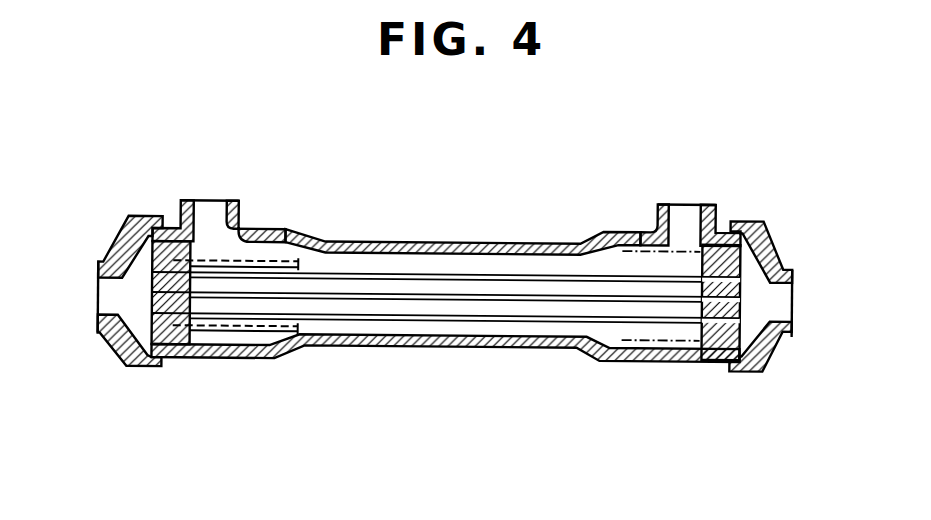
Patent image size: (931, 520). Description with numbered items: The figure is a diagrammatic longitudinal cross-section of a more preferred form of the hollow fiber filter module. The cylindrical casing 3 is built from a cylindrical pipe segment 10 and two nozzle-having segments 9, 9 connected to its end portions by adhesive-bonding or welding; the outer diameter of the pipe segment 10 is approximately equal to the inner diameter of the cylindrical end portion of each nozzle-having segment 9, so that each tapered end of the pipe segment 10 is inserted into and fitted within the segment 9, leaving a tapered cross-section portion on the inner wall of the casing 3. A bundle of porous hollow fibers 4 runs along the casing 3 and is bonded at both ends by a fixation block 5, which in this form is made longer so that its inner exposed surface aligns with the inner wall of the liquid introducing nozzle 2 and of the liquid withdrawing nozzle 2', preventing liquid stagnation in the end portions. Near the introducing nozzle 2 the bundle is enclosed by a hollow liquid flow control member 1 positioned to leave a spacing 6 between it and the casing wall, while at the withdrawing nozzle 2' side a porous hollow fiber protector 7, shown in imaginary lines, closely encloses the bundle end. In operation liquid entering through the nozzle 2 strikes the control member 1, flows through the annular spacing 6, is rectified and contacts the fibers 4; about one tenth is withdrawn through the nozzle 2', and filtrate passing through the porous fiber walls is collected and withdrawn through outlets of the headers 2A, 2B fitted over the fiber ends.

The liquid flow control member 1 is at (276, 251).
The liquid introducing nozzle 2 is at (219, 192).
The liquid withdrawing nozzle 2' is at (671, 188).
The header 2A is at (117, 358).
The header 2B is at (781, 348).
The cylindrical casing 3 is at (453, 240).
The porous hollow fibers 4 is at (480, 273).
The fixation block 5 is at (150, 226).
The spacing 6 is at (262, 331).
The hollow fiber protector 7 is at (640, 339).
The nozzle-having segment 9 is at (228, 357).
The cylindrical pipe segment 10 is at (458, 345).